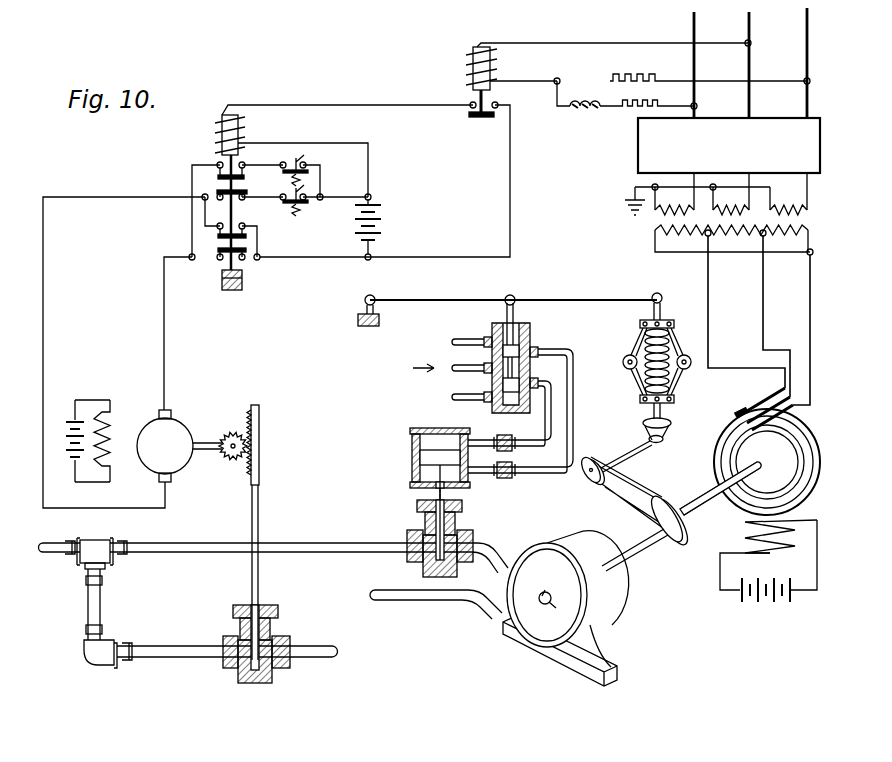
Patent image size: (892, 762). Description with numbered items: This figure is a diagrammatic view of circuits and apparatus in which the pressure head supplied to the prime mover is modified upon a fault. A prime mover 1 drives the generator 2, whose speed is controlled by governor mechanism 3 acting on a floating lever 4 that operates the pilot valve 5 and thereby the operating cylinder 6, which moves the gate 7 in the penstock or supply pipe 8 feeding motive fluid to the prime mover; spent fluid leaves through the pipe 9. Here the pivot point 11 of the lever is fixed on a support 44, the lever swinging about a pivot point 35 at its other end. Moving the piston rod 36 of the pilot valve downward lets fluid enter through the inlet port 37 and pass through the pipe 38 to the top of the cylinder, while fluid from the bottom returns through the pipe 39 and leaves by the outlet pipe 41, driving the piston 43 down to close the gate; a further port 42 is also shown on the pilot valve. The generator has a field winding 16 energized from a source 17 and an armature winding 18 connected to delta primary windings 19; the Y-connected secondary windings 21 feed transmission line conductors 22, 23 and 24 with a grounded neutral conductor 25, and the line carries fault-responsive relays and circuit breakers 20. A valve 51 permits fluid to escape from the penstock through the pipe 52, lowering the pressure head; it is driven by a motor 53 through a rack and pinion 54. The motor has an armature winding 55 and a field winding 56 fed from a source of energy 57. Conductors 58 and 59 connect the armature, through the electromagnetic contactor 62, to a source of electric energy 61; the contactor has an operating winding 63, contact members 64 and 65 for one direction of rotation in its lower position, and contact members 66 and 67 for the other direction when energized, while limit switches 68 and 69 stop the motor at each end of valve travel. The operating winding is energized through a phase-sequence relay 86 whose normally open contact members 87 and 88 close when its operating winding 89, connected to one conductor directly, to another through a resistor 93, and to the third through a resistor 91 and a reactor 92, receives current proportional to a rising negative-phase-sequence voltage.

The prime mover 1 is at (534, 531).
The generator 2 is at (708, 457).
The governor mechanism 3 is at (645, 360).
The floating lever 4 is at (493, 307).
The pilot valve 5 is at (483, 354).
The operating cylinder 6 is at (428, 464).
The gate 7 is at (398, 522).
The penstock or supply pipe 8 is at (497, 561).
The pipe 9 is at (436, 603).
The pivot point 11 is at (364, 302).
The field winding 16 is at (772, 552).
The source 17 is at (761, 602).
The armature winding 18 is at (735, 513).
The primary windings 19 is at (657, 247).
The fault-responsive relays and circuit breakers 20 is at (768, 117).
The secondary windings 21 is at (656, 221).
The transmission line conductor 22 is at (692, 19).
The transmission line conductor 23 is at (747, 19).
The transmission line conductor 24 is at (805, 19).
The grounded neutral conductor 25 is at (628, 189).
The pivot point 35 is at (661, 297).
The piston rod 36 is at (514, 312).
The inlet port 37 is at (457, 366).
The pipe 38 is at (519, 449).
The pipe 39 is at (522, 477).
The outlet pipe 41 is at (457, 341).
The exhaust port 42 is at (457, 395).
The piston 43 is at (440, 456).
The support 44 is at (358, 322).
The valve 51 is at (285, 618).
The pipe 52 is at (169, 648).
The motor 53 is at (156, 437).
The rack and pinion 54 is at (262, 446).
The armature winding 55 is at (187, 470).
The field winding 56 is at (111, 423).
The source of energy 57 is at (85, 460).
The conductor 58 is at (156, 193).
The conductor 59 is at (168, 257).
The source of electric energy 61 is at (377, 211).
The electromagnetic contactor 62 is at (327, 197).
The operating winding 63 is at (239, 134).
The contact member 64 is at (246, 190).
The contact member 65 is at (249, 251).
The contact member 66 is at (219, 176).
The contact member 67 is at (219, 237).
The limit switch 68 is at (301, 167).
The limit switch 69 is at (303, 203).
The phase-sequence relay 86 is at (595, 74).
The contact member 87 is at (468, 116).
The contact member 88 is at (470, 104).
The operating winding 89 is at (477, 55).
The resistor 91 is at (636, 117).
The reactor 92 is at (588, 112).
The resistor 93 is at (659, 81).